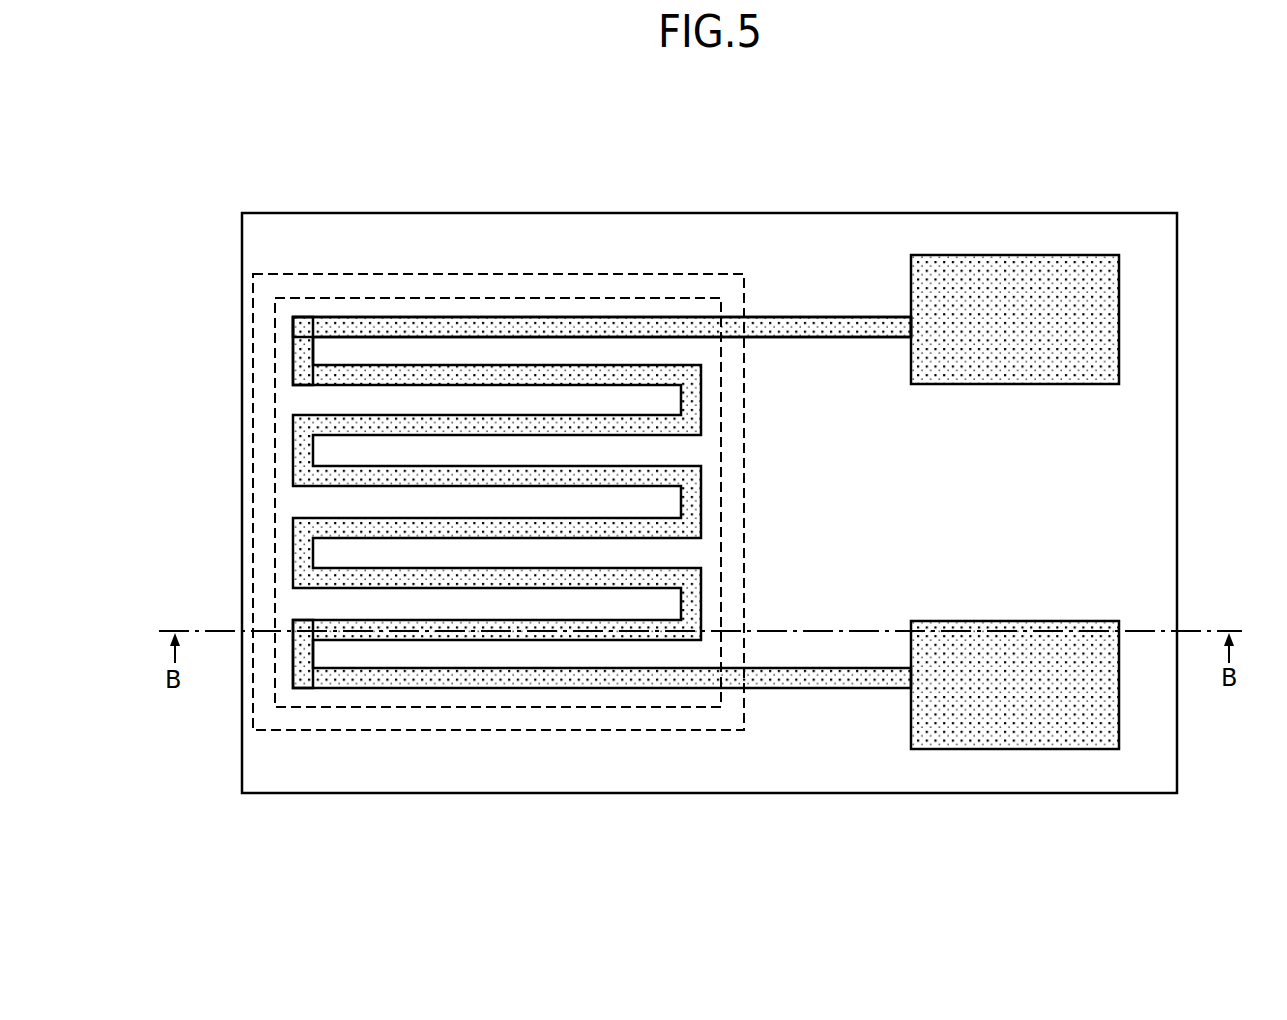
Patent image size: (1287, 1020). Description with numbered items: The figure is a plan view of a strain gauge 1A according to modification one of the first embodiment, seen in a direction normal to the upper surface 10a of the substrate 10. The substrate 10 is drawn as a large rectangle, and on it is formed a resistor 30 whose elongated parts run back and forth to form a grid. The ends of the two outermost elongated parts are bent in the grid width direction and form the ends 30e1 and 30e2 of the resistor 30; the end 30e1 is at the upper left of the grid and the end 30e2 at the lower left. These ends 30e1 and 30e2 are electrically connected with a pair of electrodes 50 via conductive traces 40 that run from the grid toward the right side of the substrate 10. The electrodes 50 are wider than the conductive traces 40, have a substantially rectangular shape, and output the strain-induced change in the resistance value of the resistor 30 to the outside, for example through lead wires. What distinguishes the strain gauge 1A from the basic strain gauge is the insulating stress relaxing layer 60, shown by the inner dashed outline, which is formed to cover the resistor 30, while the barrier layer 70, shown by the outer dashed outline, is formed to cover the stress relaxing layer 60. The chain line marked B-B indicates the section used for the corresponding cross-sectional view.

The strain gauge 1A is at (205, 120).
The substrate 10 is at (1080, 213).
The upper surface of substrate 10a is at (1141, 227).
The resistor 30 is at (749, 339).
The end of resistor in grid width direction 30e1 is at (306, 330).
The end of resistor in grid width direction 30e2 is at (305, 668).
The conductive traces 40 is at (640, 328).
The electrodes 50 is at (1013, 290).
The stress relaxing layer 60 is at (464, 297).
The barrier layer 70 is at (558, 273).